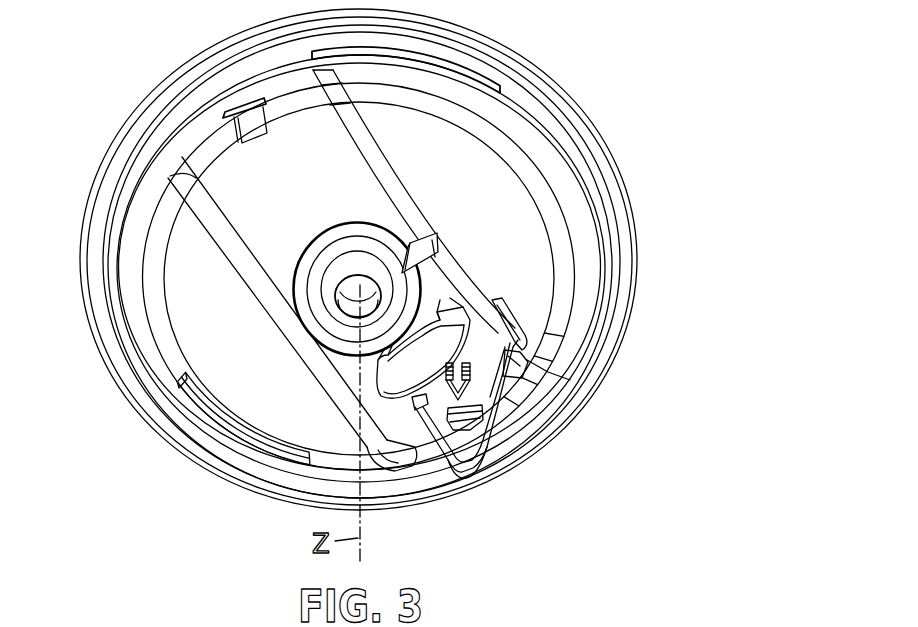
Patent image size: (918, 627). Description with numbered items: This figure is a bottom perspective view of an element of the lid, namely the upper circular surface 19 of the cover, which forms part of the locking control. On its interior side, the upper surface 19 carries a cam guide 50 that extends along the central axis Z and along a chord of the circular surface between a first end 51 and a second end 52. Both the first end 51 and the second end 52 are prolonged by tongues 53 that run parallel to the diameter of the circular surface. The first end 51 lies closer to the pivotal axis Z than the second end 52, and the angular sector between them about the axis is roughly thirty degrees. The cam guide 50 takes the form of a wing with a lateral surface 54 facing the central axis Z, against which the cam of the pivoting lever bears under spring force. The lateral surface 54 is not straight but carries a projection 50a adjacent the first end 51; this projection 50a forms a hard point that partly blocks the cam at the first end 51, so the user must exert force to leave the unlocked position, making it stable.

The first element forming the upper circular surface of the cover 19 is at (517, 80).
The cam guide 50 is at (505, 415).
The projection 50a is at (515, 372).
The first end 51 is at (530, 360).
The second end 52 is at (467, 478).
The tongues 53 is at (518, 318).
The lateral surface 54 is at (487, 450).